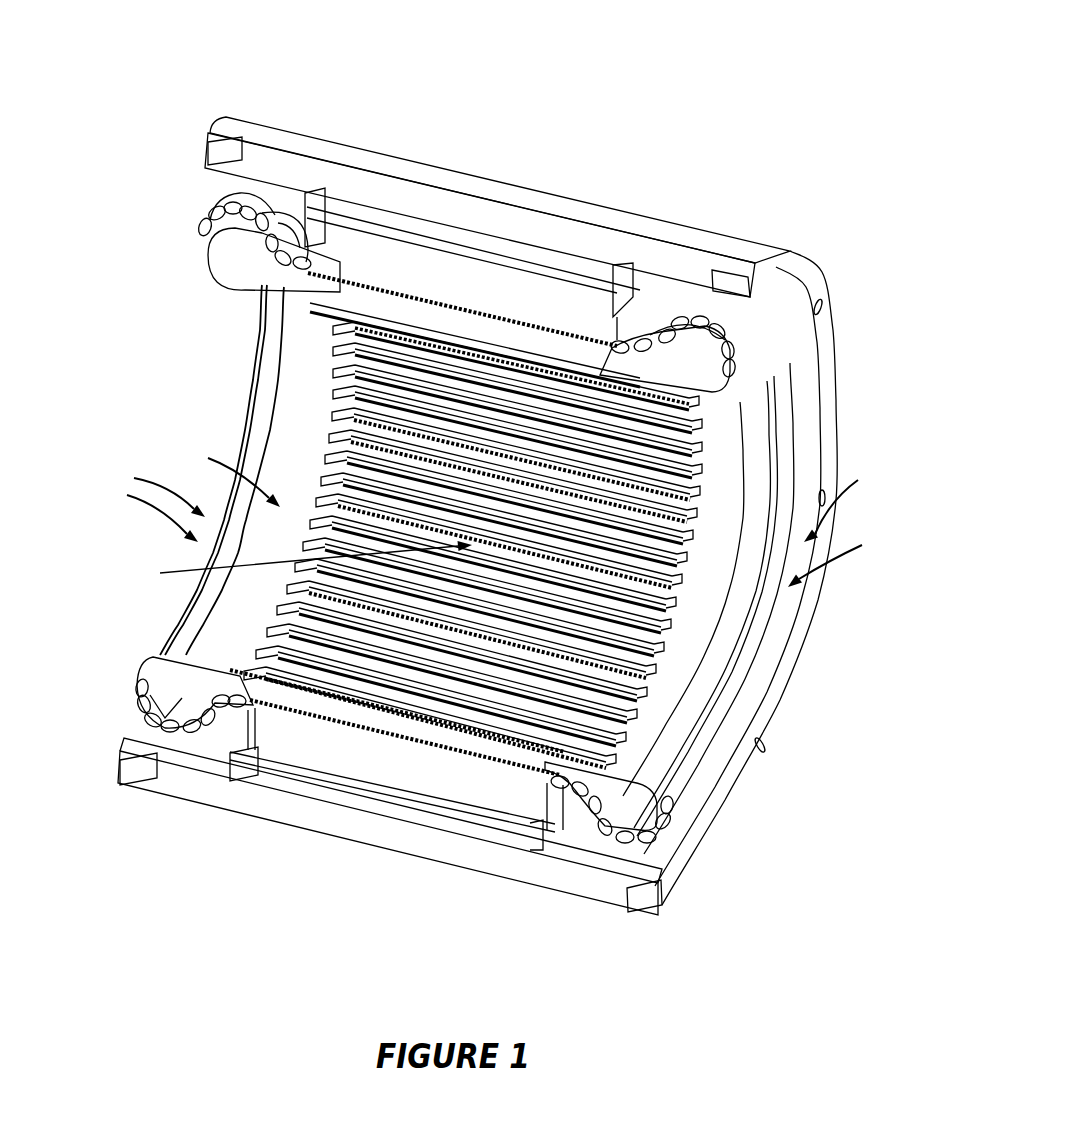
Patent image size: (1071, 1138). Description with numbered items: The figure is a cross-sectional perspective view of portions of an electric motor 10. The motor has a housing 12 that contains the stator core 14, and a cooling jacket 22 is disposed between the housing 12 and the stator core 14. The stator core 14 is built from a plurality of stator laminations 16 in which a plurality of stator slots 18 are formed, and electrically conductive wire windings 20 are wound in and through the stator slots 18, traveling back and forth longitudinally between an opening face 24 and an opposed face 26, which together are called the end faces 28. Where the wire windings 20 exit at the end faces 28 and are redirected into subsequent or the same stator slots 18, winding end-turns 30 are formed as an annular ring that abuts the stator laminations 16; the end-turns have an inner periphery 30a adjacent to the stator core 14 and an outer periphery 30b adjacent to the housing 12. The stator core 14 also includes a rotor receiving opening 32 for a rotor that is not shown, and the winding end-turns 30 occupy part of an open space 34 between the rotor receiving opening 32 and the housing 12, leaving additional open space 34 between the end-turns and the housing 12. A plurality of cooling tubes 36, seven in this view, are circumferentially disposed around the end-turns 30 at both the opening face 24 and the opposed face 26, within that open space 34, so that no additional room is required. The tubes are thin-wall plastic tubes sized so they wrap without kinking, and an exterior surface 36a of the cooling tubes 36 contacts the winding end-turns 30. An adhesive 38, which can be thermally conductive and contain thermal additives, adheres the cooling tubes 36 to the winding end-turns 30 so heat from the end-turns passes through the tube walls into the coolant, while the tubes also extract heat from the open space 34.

The electric motor 10 is at (752, 118).
The housing 12 is at (530, 235).
The stator core 14 is at (228, 477).
The stator laminations 16 is at (333, 329).
The stator slots 18 is at (320, 485).
The wire windings 20 is at (365, 342).
The cooling jacket 22 is at (410, 232).
The opening face 24 is at (834, 553).
The opposed face 26 is at (147, 512).
The end faces 28 is at (492, 497).
The winding end-turns 30 is at (433, 529).
The inner periphery 30a is at (240, 287).
The outer periphery 30b is at (250, 236).
The rotor receiving opening 32 is at (299, 562).
The open space 34 is at (227, 178).
The cooling tubes 36 is at (218, 203).
The exterior surface 36a is at (745, 346).
The adhesive 38 is at (682, 333).